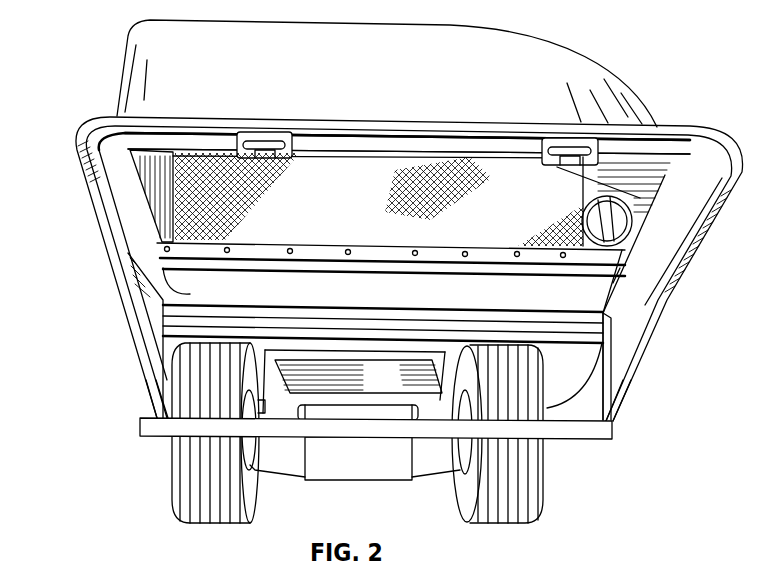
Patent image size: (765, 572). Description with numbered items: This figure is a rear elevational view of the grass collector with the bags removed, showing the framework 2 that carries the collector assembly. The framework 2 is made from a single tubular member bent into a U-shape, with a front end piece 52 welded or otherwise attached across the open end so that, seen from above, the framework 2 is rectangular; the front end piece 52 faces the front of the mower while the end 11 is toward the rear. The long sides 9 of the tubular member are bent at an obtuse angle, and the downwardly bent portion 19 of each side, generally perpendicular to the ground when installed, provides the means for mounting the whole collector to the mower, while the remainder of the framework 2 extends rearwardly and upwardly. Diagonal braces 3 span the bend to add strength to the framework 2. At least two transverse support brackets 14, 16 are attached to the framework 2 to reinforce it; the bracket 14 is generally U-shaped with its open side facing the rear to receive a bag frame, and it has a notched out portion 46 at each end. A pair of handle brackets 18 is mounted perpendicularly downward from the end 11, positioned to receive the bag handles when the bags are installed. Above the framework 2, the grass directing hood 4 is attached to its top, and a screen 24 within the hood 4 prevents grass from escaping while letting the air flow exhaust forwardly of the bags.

The framework 2 is at (110, 205).
The diagonal braces 3 is at (618, 381).
The hood 4 is at (611, 78).
The long sides 9 is at (130, 230).
The end 11 is at (392, 144).
The transverse support bracket 14 is at (325, 272).
The transverse support bracket 16 is at (422, 307).
The handle brackets 18 is at (255, 134).
The downwardly bent portion 19 is at (611, 350).
The screen 24 is at (335, 208).
The notched out portion 46 is at (198, 284).
The front end piece 52 is at (585, 434).